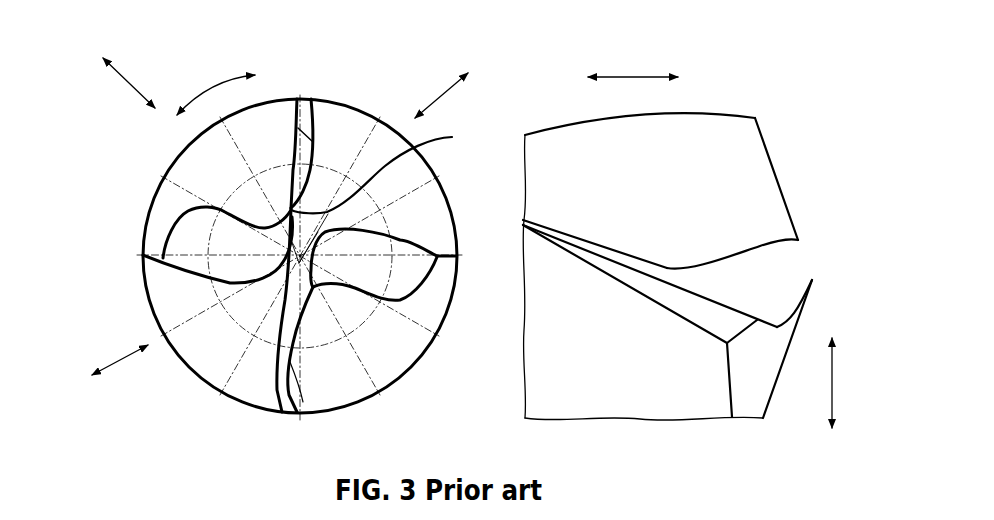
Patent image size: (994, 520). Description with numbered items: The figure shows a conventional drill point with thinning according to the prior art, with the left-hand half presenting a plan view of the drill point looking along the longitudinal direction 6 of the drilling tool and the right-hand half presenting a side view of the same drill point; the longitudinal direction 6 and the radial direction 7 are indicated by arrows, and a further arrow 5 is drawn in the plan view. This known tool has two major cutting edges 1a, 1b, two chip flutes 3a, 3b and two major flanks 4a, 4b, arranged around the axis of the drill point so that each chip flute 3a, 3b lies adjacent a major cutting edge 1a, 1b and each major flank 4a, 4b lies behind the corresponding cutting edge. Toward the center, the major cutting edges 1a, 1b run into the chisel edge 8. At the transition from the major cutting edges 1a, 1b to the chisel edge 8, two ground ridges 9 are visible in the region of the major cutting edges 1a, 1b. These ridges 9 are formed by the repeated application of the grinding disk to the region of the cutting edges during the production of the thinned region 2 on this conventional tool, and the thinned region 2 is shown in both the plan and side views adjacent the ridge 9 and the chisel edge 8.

The major cutting edge 1a is at (300, 125).
The major cutting edge 1b is at (307, 410).
The thinned region 2 is at (410, 218).
The chip flute 3a is at (213, 183).
The chip flute 3b is at (377, 337).
The major flank 4a is at (350, 147).
The major flank 4b is at (203, 350).
The rotation direction 5 is at (213, 87).
The longitudinal direction 6 is at (638, 77).
The radial direction 7 is at (130, 84).
The chisel edge 8 is at (280, 410).
The ground ridge 9 is at (820, 180).